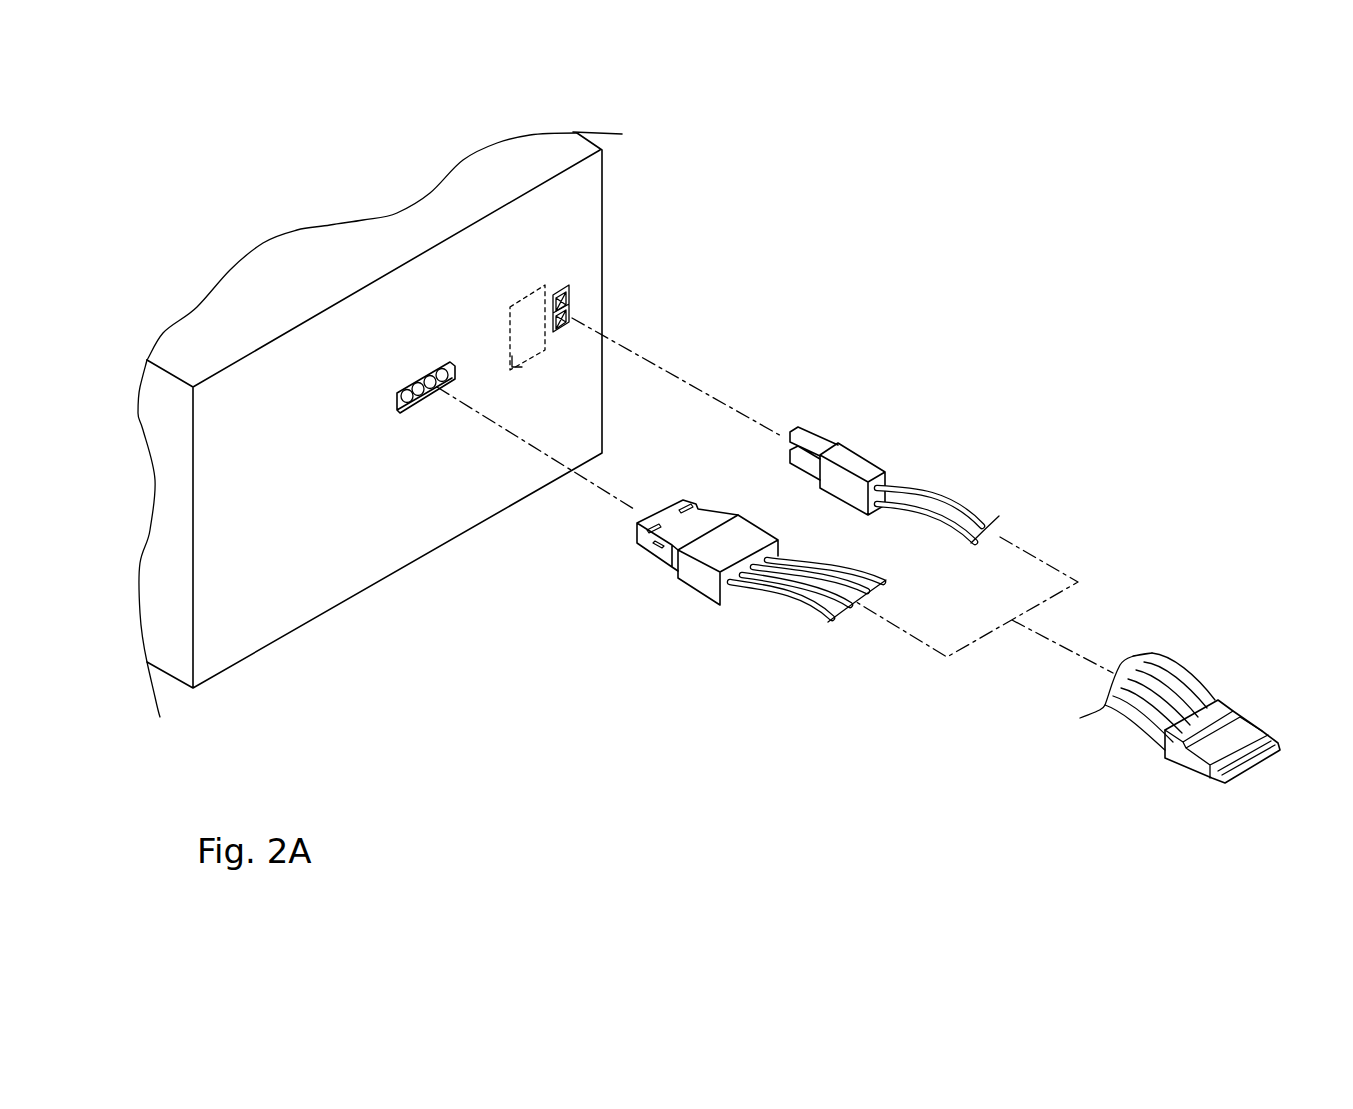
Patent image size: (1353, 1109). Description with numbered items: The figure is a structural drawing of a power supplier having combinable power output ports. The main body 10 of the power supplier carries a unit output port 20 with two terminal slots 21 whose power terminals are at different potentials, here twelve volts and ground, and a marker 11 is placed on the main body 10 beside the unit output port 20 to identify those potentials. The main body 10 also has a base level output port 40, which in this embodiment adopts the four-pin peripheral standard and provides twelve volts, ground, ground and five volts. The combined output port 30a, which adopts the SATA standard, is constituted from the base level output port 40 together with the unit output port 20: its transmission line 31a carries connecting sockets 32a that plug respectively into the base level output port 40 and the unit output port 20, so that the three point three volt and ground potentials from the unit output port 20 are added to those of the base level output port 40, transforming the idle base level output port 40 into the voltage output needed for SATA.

The main body 10 is at (578, 147).
The marker 11 is at (522, 367).
The unit output port 20 is at (568, 293).
The terminal slot 21 is at (562, 328).
The combined output port 30a is at (1178, 757).
The transmission line 31a is at (955, 507).
The connecting socket 32a is at (855, 455).
The base level output port 40 is at (420, 398).